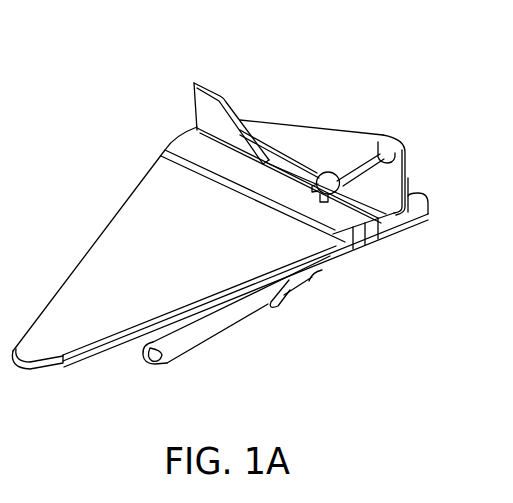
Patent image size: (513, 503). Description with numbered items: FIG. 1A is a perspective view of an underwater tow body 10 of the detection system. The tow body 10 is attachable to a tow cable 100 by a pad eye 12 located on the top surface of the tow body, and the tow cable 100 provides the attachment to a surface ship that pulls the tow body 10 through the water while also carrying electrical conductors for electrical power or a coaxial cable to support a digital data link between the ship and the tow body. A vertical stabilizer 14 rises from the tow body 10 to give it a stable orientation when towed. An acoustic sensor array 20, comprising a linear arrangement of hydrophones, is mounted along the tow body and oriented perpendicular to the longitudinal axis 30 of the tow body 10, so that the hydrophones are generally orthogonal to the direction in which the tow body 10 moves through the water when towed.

The tow body 10 is at (142, 172).
The pad eye 12 is at (326, 200).
The vertical stabilizer 14 is at (221, 88).
The acoustic sensor array 20 is at (225, 327).
The longitudinal axis 30 is at (10, 224).
The tow cable 100 is at (406, 165).